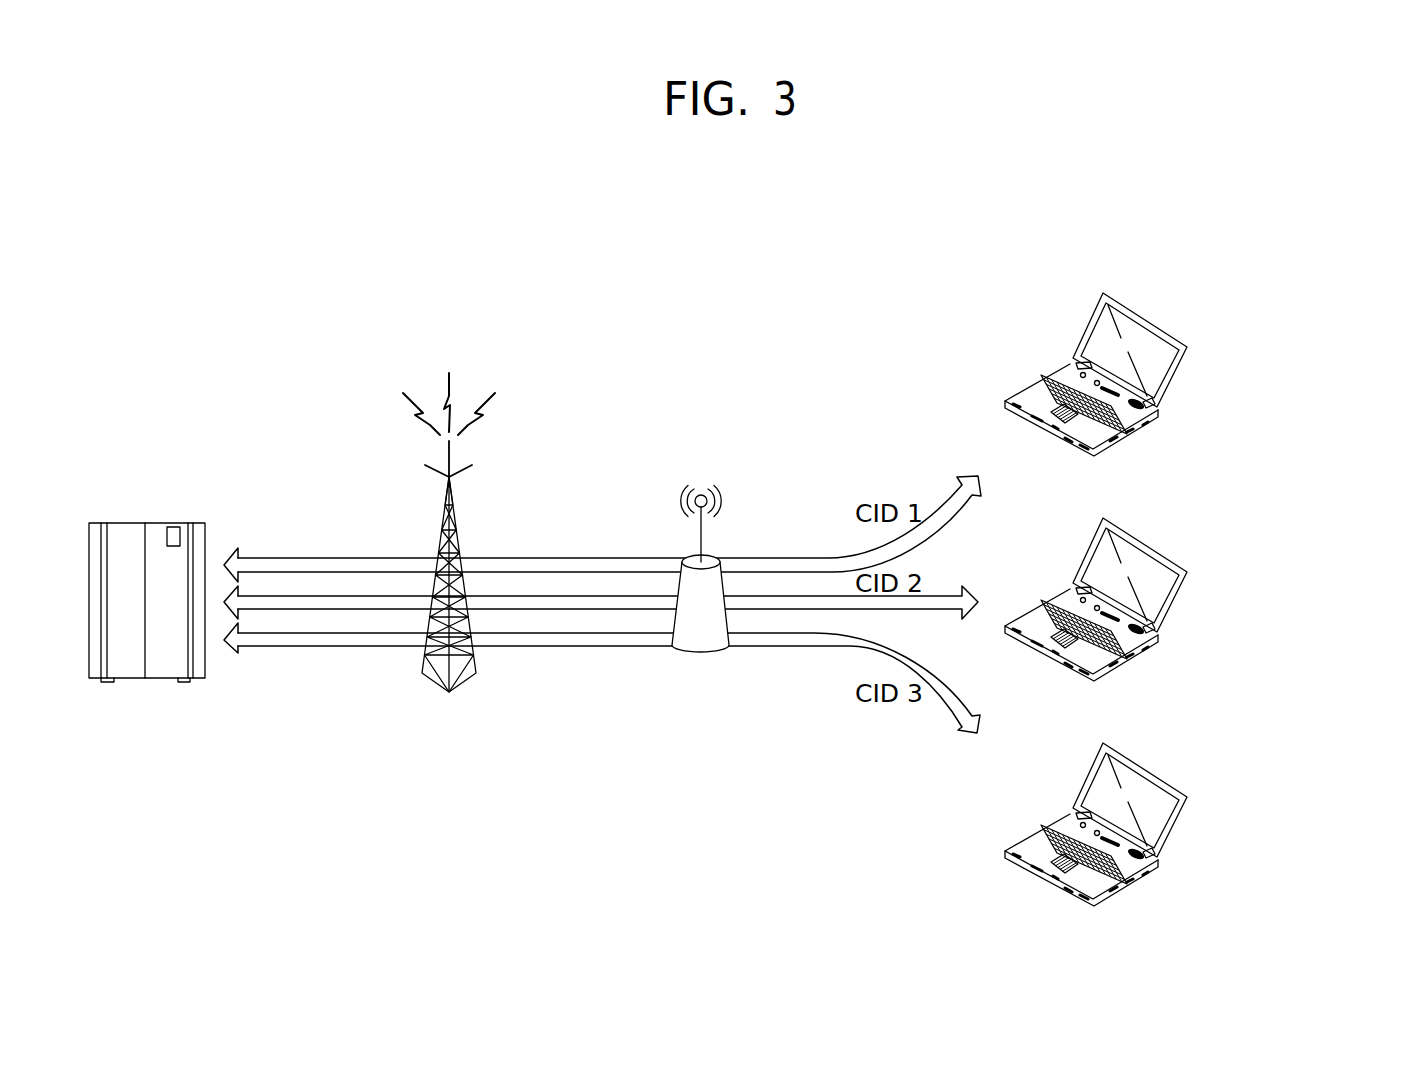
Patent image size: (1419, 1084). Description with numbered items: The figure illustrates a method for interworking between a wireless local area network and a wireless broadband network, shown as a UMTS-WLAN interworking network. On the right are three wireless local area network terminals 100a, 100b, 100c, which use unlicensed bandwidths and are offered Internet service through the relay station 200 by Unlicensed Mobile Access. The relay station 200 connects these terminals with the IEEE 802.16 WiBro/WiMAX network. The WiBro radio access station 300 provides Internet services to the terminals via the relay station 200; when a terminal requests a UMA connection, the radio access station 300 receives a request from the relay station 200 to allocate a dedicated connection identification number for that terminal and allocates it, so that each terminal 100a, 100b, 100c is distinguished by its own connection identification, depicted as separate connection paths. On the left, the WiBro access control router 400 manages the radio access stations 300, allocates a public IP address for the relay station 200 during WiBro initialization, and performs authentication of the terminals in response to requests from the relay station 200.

The Wireless Local Area Network (WLAN) terminal 100a is at (1145, 317).
The Wireless Local Area Network (WLAN) terminal 100b is at (1145, 542).
The Wireless Local Area Network (WLAN) terminal 100c is at (1145, 767).
The Relay Station (RS) 200 is at (708, 558).
The Wireless Broadband (WiBro) Radio Access Station (RAS) 300 is at (458, 543).
The Wireless Broadband (WiBro) Access Control Router (ACR) 400 is at (127, 522).